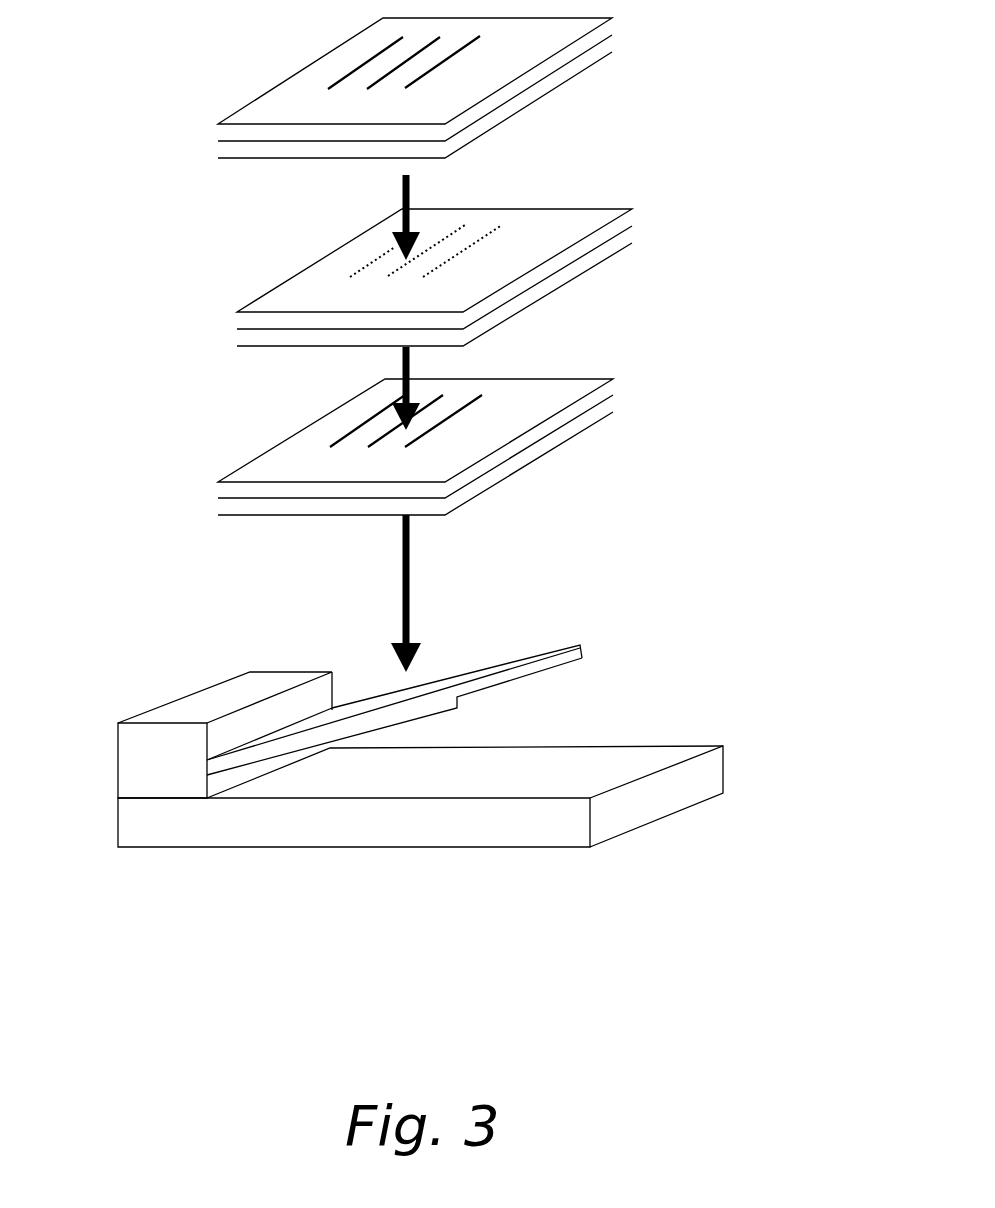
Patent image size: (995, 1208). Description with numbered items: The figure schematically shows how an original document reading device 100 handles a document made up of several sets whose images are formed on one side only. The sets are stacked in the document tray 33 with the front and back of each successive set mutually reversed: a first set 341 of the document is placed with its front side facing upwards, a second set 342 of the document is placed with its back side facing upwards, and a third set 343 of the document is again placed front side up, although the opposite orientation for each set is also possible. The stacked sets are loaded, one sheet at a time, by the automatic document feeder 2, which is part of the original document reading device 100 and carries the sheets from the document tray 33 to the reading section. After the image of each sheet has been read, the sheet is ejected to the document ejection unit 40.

The first set of the document 341 is at (633, 10).
The second set of the document 342 is at (648, 200).
The third set of the document 343 is at (630, 372).
The document tray 33 is at (487, 675).
The document ejection unit 40 is at (623, 753).
The automatic document feeder 2 is at (128, 748).
The original document reading device 100 is at (386, 888).